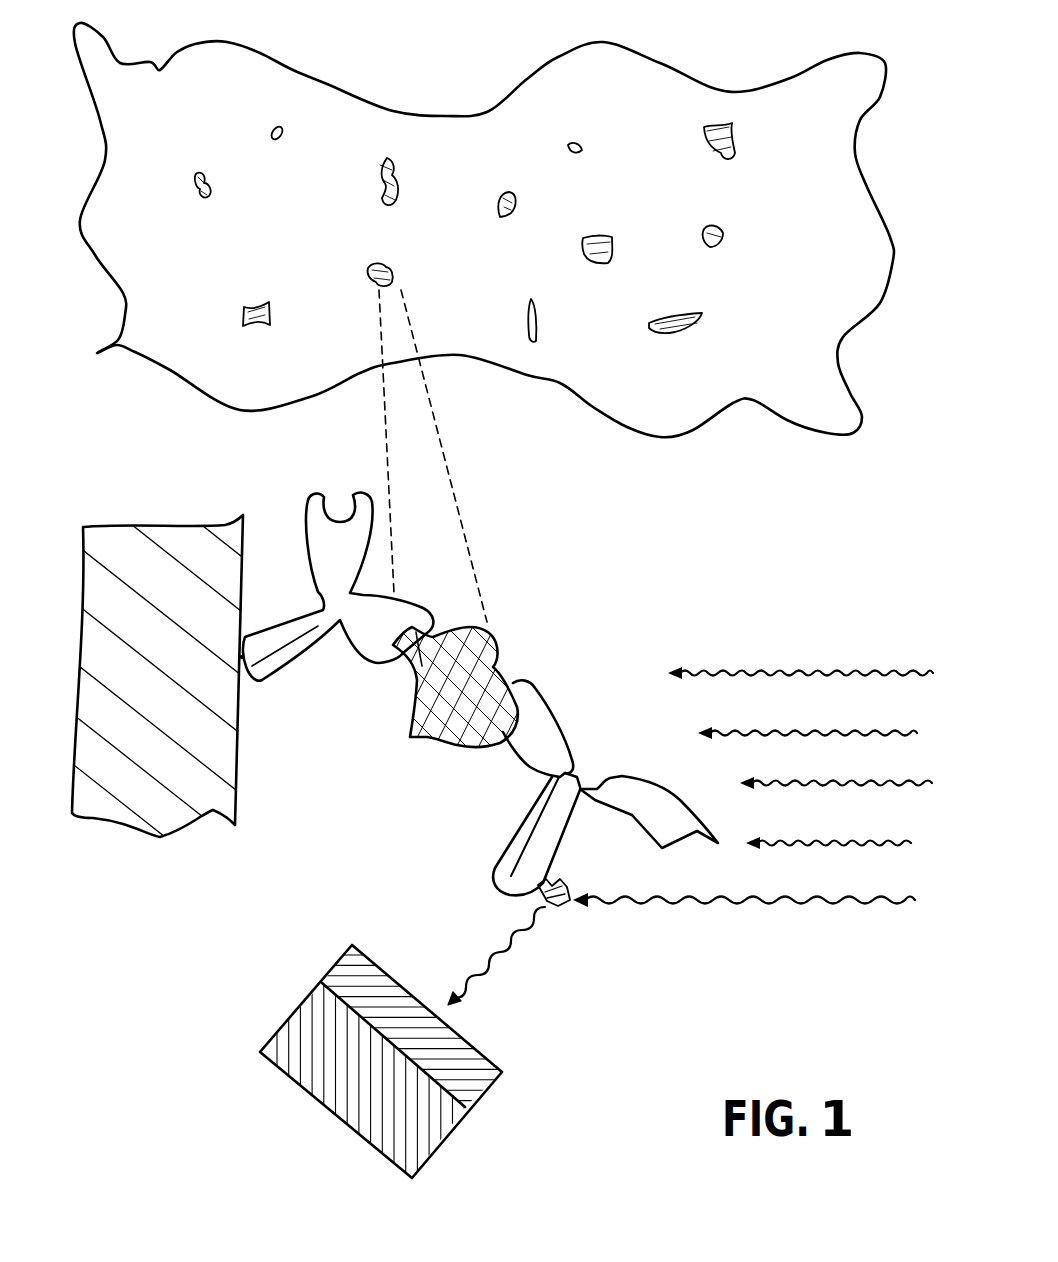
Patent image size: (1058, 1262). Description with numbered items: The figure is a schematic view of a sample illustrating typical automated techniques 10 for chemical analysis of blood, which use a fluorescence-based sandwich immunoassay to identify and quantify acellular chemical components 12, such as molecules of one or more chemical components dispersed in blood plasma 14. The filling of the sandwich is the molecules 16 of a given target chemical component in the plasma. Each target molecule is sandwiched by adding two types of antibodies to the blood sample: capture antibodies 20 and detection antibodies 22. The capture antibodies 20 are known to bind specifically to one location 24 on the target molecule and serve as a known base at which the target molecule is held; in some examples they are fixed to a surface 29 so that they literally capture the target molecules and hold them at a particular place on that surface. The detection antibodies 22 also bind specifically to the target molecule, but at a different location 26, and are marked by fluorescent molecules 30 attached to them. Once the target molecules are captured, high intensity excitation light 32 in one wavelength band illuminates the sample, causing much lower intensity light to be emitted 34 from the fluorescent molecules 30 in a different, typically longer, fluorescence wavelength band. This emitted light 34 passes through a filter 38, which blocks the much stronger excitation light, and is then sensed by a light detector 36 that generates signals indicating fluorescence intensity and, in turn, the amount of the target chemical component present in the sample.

The automated techniques 10 is at (37, 80).
The acellular chemical components 12 is at (398, 280).
The blood plasma 14 is at (760, 88).
The molecules of a target chemical component 16 is at (502, 643).
The capture antibodies 20 is at (312, 658).
The detection antibodies 22 is at (574, 758).
The binding location for capture antibodies 24 is at (410, 740).
The binding location for detection antibodies 26 is at (518, 715).
The wall / substrate 29 is at (243, 752).
The fluorescent molecules 30 is at (560, 884).
The excitation light 32 is at (833, 733).
The emitted light 34 is at (528, 928).
The light detector 36 is at (307, 1093).
The filter 38 is at (333, 967).